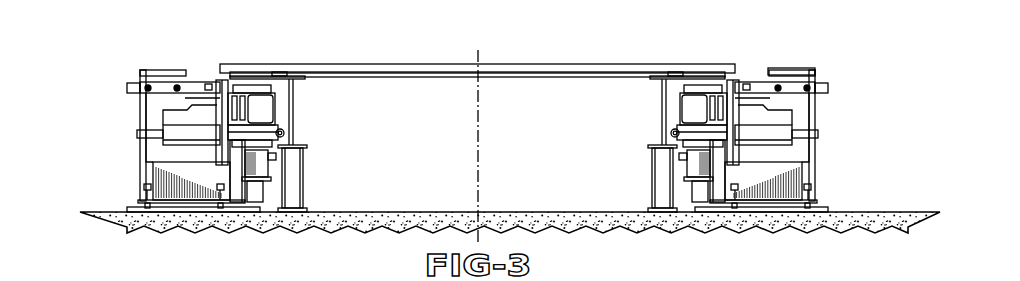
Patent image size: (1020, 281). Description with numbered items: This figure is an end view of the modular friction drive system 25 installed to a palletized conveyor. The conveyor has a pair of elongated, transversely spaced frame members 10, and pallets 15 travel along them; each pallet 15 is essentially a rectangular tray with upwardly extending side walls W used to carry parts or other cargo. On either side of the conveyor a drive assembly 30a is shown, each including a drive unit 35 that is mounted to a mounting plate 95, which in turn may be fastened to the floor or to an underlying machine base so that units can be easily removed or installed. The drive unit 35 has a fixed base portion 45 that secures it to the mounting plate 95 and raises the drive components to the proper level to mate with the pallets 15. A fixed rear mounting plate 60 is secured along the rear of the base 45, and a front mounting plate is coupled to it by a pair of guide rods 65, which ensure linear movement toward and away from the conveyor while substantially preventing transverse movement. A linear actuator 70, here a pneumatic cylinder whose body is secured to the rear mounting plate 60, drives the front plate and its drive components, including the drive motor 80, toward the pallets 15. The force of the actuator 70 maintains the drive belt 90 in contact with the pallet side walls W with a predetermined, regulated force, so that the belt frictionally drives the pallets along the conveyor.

The frame member 10 is at (294, 120).
The pallet 15 is at (538, 72).
The modular friction drive system 25 is at (143, 39).
The drive assembly 30a is at (118, 88).
The drive unit 35 is at (122, 135).
The fixed base portion 45 is at (148, 163).
The rear mounting plate 60 is at (140, 124).
The guide rod 65 is at (180, 139).
The linear actuator 70 is at (793, 68).
The drive motor 80 is at (258, 178).
The drive belt 90 is at (698, 73).
The mounting plate 95 is at (132, 208).
The side wall W is at (280, 64).